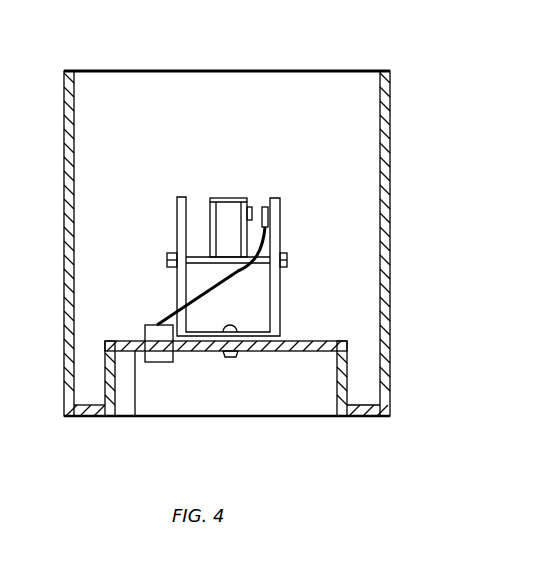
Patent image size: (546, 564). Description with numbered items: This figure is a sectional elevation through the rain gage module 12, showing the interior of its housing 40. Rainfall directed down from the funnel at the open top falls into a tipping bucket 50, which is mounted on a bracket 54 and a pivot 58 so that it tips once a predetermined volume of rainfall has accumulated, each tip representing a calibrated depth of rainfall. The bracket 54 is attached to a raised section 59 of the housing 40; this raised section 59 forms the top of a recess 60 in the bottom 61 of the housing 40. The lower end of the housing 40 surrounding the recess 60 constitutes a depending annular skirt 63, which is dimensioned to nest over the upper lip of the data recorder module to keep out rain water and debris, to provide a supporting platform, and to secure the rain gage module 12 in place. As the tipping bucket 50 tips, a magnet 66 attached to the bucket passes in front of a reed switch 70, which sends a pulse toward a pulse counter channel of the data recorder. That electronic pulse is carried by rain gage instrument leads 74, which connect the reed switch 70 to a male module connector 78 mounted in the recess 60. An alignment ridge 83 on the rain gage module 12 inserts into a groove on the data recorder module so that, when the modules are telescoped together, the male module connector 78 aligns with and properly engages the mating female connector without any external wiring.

The rain gage module 12 is at (247, 72).
The housing 40 is at (68, 288).
The tipping bucket 50 is at (227, 208).
The bracket 54 is at (273, 298).
The pivot 58 is at (197, 257).
The raised section 59 is at (305, 351).
The recess 60 is at (337, 370).
The bottom 61 is at (80, 416).
The depending annular skirt 63 is at (63, 400).
The magnet 66 is at (252, 210).
The reed switch 70 is at (268, 210).
The rain gage instrument leads 74 is at (255, 261).
The male module connector 78 is at (155, 325).
The alignment ridge 83 is at (127, 393).